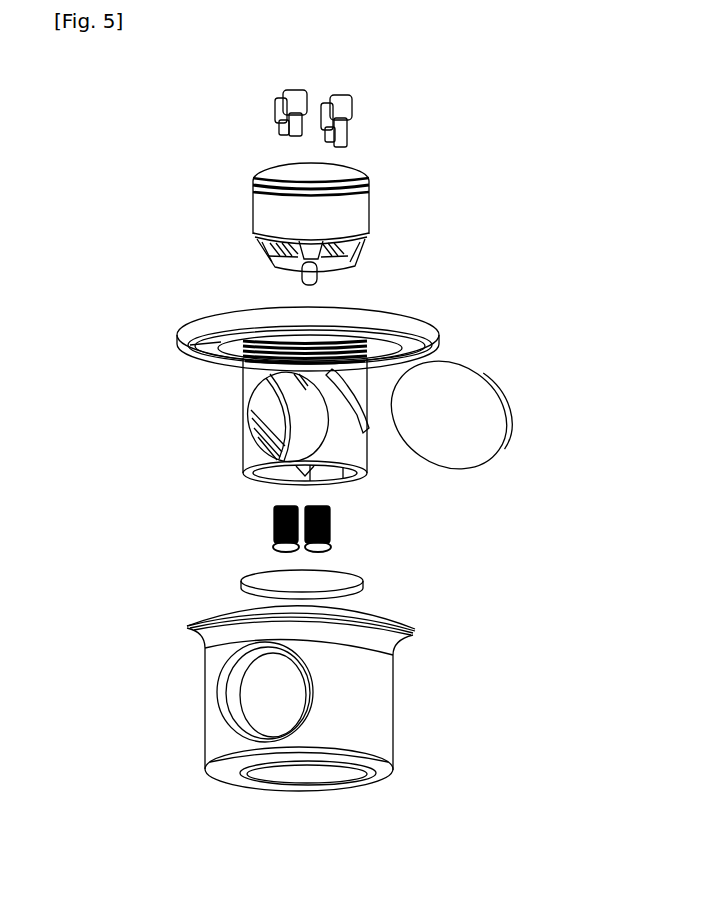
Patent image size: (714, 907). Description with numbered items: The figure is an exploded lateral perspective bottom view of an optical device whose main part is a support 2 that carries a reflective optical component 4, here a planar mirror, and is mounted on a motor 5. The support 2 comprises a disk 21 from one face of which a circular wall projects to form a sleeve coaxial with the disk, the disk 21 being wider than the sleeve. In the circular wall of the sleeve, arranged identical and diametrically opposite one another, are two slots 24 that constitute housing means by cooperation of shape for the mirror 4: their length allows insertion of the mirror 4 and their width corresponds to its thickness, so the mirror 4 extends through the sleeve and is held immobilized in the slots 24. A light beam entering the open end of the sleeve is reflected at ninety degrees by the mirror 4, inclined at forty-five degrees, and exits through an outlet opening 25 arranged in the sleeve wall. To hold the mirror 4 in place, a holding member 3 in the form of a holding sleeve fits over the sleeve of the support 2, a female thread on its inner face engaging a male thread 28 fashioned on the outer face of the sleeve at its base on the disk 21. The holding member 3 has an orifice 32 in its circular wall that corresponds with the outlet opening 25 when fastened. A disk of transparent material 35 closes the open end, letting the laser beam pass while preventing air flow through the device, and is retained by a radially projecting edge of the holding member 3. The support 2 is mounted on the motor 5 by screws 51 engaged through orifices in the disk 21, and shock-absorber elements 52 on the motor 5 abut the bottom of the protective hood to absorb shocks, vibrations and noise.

The support 2 is at (198, 400).
The holding member 3 is at (395, 703).
The reflective optical component 4 is at (487, 412).
The motor 5 is at (388, 159).
The disk 21 is at (420, 327).
The slots 24 is at (377, 421).
The outlet opening 25 is at (290, 434).
The male thread 28 is at (240, 351).
The orifice 32 is at (268, 703).
The disk of transparent material 35 is at (363, 587).
The screws 51 is at (333, 530).
The shock-absorber elements 52 is at (275, 110).